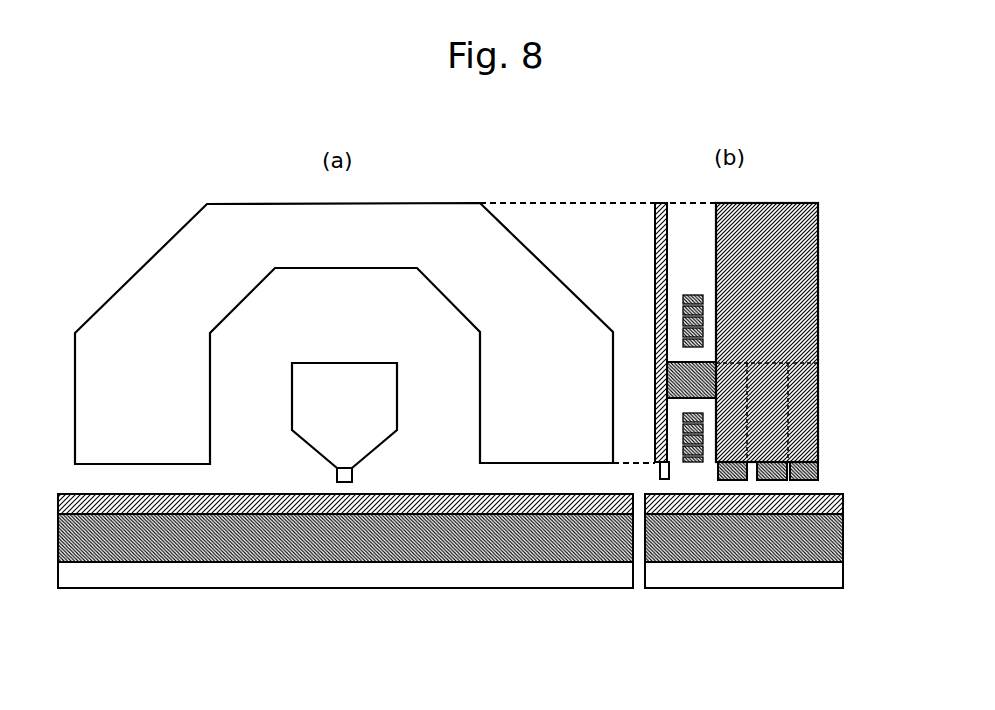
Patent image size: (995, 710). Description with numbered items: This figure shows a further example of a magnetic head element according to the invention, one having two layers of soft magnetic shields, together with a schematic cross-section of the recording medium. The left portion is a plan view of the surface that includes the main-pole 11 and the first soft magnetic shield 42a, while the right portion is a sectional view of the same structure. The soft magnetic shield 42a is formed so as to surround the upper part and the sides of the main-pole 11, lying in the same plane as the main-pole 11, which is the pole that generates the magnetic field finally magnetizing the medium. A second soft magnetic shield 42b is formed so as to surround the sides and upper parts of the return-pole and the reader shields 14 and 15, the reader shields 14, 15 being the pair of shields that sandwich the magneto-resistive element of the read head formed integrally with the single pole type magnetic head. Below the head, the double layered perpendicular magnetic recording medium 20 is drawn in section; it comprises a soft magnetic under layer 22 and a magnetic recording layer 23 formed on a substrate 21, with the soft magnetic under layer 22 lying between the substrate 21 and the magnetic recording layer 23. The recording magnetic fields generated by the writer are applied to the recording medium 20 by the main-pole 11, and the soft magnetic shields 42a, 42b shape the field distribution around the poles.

The soft magnetic shield 42a is at (168, 257).
The soft magnetic shield 42b is at (772, 214).
The main-pole 11 is at (368, 453).
The reader shield 15 is at (778, 402).
The reader shield 14 is at (818, 468).
The double layered perpendicular magnetic recording medium 20 is at (495, 541).
The substrate 21 is at (470, 575).
The soft magnetic under layer 22 is at (818, 535).
The magnetic recording layer 23 is at (815, 503).